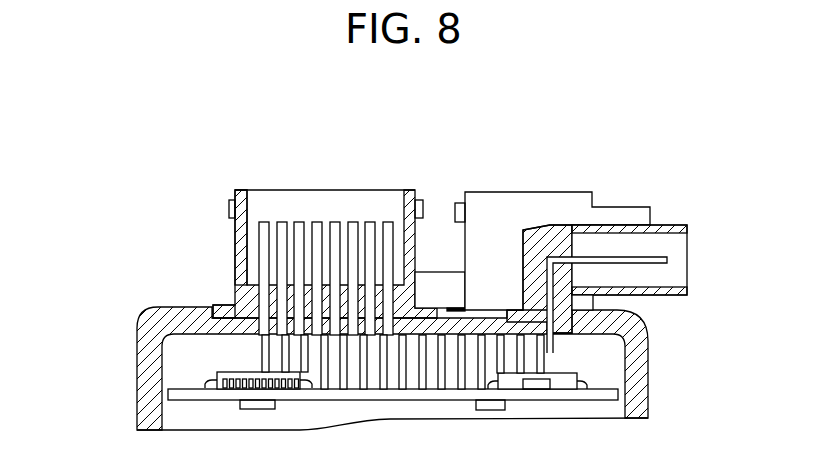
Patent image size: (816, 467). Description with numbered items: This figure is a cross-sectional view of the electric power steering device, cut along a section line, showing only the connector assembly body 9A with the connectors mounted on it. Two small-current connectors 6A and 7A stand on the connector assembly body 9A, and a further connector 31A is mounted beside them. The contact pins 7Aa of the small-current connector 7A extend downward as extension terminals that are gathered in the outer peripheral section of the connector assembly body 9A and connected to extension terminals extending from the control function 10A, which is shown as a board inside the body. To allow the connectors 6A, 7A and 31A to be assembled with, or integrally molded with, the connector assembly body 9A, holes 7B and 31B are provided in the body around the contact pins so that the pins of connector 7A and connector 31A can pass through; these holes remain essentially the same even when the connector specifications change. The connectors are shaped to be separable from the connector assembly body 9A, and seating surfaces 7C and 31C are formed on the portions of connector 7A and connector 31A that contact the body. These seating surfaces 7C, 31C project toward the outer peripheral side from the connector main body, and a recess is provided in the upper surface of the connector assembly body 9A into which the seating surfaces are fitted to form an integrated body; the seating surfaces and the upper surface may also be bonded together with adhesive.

The connector assembly body 9A is at (146, 308).
The control function 10A is at (612, 397).
The small-current connector 7A is at (282, 192).
The contact pins 7Aa is at (349, 223).
The hole 7B is at (238, 303).
The seating surface 7C is at (234, 305).
The small-current connector 6A is at (555, 192).
The connector 31A is at (647, 238).
The hole 31B is at (560, 333).
The seating surface 31C is at (515, 310).